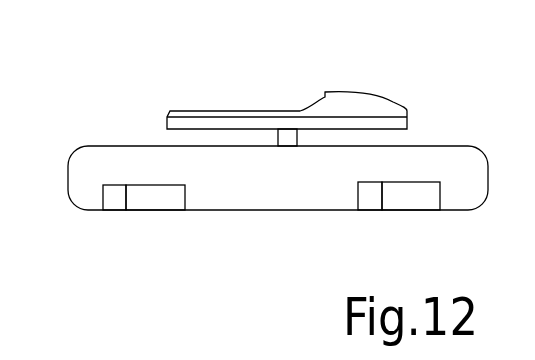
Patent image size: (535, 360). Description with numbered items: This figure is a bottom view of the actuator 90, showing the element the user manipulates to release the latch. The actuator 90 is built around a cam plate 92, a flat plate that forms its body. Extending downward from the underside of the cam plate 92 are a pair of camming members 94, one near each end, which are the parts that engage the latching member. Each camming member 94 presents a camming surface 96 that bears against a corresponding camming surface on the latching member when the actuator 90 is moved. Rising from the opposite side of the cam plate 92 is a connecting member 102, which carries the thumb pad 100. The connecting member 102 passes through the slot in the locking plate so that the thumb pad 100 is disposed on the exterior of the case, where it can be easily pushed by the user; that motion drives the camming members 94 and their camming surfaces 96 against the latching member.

The actuator 90 is at (105, 81).
The cam plate 92 is at (257, 196).
The camming member 94 is at (113, 209).
The camming surface 96 is at (159, 208).
The thumb pad 100 is at (343, 93).
The connecting member 102 is at (290, 137).